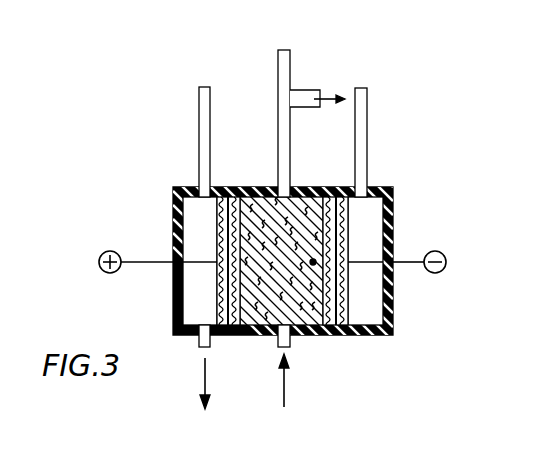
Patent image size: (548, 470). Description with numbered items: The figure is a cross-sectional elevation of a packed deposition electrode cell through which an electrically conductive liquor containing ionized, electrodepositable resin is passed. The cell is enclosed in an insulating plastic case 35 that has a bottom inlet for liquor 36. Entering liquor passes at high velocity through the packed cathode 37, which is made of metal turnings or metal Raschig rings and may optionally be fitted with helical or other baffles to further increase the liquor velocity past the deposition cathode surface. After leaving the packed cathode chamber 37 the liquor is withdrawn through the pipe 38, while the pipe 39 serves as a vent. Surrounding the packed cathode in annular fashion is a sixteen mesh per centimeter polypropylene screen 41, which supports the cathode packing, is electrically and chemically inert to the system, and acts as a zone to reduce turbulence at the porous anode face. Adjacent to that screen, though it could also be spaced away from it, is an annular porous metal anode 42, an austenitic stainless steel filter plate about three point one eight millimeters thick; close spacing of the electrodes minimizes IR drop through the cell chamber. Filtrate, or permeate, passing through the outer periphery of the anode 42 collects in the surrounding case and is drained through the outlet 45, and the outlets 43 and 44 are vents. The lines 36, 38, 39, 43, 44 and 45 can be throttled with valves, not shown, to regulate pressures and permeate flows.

The insulating plastic case 35 is at (393, 211).
The bottom inlet for liquor 36 is at (290, 340).
The packed cathode 37 is at (305, 193).
The pipe 38 is at (306, 90).
The vent 39 is at (278, 70).
The polypropylene screen 41 is at (228, 193).
The annular porous metal anode 42 is at (217, 221).
The vent 43 is at (367, 118).
The vent 44 is at (199, 138).
The outlet 45 is at (199, 342).